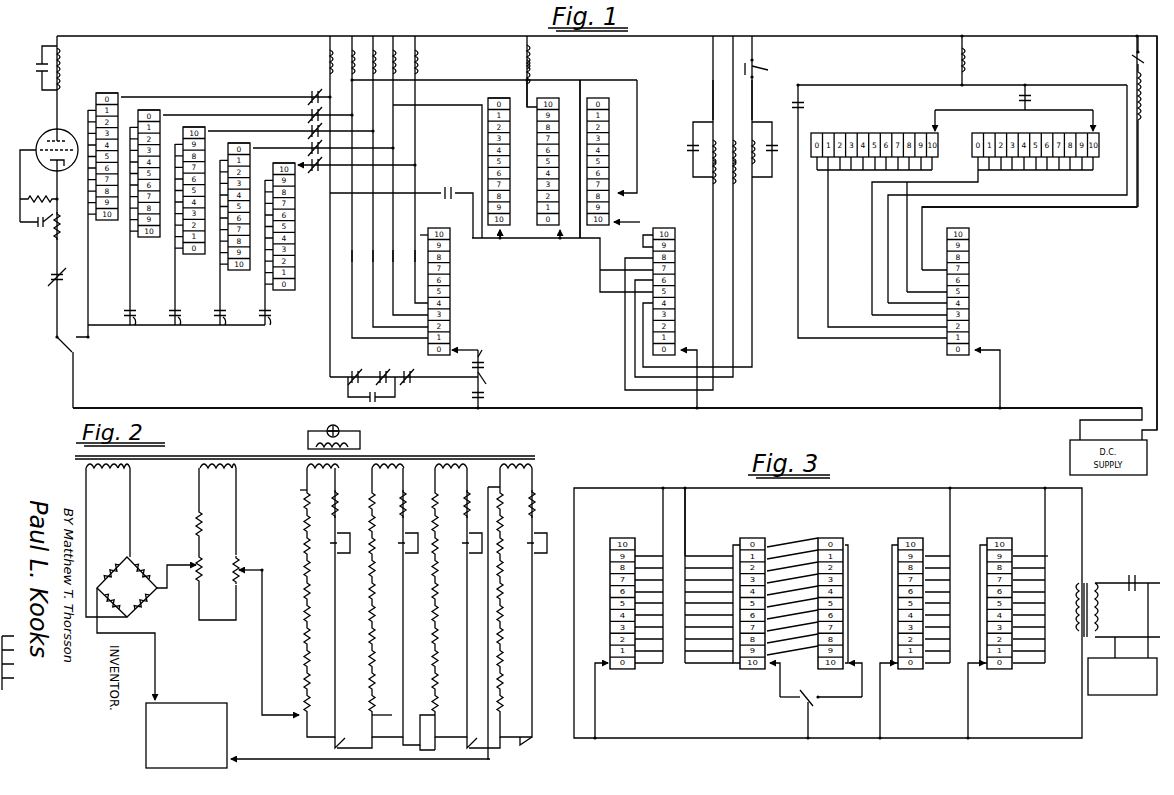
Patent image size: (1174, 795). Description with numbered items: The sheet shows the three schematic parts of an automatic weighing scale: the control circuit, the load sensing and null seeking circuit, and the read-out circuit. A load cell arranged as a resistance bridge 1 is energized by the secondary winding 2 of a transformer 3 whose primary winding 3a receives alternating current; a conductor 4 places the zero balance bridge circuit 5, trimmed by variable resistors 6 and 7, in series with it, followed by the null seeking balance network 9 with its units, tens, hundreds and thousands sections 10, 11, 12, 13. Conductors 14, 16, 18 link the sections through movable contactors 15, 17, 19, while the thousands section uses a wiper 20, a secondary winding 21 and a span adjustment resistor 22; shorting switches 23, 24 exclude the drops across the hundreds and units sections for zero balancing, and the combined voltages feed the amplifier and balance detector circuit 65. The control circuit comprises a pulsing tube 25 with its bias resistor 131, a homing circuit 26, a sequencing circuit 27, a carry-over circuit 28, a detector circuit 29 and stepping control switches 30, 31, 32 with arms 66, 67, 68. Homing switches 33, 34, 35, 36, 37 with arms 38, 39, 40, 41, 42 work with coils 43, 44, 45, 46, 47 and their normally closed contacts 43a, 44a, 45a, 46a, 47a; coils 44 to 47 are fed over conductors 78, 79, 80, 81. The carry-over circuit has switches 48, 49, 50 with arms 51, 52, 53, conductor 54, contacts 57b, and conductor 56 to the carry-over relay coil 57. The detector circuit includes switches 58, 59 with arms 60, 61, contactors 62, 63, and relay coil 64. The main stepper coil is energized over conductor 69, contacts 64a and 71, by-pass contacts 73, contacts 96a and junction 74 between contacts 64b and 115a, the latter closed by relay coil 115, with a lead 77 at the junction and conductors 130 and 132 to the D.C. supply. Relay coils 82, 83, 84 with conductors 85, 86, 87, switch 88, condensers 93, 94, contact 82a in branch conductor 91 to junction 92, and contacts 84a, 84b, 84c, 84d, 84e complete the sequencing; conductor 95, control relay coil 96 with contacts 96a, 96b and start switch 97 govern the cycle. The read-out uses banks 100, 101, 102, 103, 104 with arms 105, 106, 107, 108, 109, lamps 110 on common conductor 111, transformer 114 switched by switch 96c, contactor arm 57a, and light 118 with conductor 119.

In FIG. 2, the resistance bridge 1 is at (127, 587).
In FIG. 2, the secondary winding 2 is at (108, 540).
In FIG. 2, the transformer 3 is at (256, 455).
In FIG. 2, the primary winding 3a is at (361, 439).
In FIG. 2, the conductor 4 is at (180, 565).
In FIG. 2, the zero balance bridge circuit 5 is at (220, 524).
In FIG. 2, the variable resistor 6 is at (206, 569).
In FIG. 2, the variable resistor 7 is at (236, 578).
In FIG. 2, the null seeking balance network 9 is at (293, 538).
In FIG. 2, the units section 10 is at (532, 492).
In FIG. 2, the tens section 11 is at (462, 600).
In FIG. 2, the hundreds section 12 is at (393, 600).
In FIG. 2, the thousands section 13 is at (347, 493).
In FIG. 2, the conductor 14 is at (337, 748).
In FIG. 2, the movable contactor 15 is at (388, 721).
In FIG. 2, the conductor 16 is at (416, 720).
In FIG. 2, the movable contactor 17 is at (432, 750).
In FIG. 2, the conductor 18 is at (455, 740).
In FIG. 2, the movable contactor 19 is at (510, 746).
In FIG. 2, the wiper 20 is at (275, 718).
In FIG. 2, the secondary winding 21 is at (316, 600).
In FIG. 2, the span adjustment resistor 22 is at (343, 535).
In FIG. 2, the shorting switch 23 is at (346, 726).
In FIG. 2, the shorting switch 24 is at (477, 726).
In FIG. 1, the pulsing tube 25 is at (44, 141).
In FIG. 1, the homing circuit 26 is at (251, 183).
In FIG. 1, the sequencing circuit 27 is at (476, 168).
In FIG. 1, the carry-over circuit 28 is at (605, 140).
In FIG. 1, the detector circuit 29 is at (962, 62).
In FIG. 1, the stepping control switch 30 is at (448, 302).
In FIG. 1, the stepping control switch 31 is at (678, 300).
In FIG. 1, the stepping control switch 32 is at (972, 304).
In FIG. 1, the adjustable contactor switch 33 is at (104, 221).
In FIG. 1, the adjustable contactor switch 34 is at (147, 238).
In FIG. 1, the adjustable contactor switch 35 is at (192, 255).
In FIG. 1, the adjustable contactor switch 36 is at (237, 271).
In FIG. 1, the adjustable contactor switch 37 is at (282, 291).
In FIG. 1, the movable switch arm 38 is at (120, 96).
In FIG. 1, the movable switch arm 39 is at (162, 113).
In FIG. 1, the movable switch arm 40 is at (207, 130).
In FIG. 1, the movable switch arm 41 is at (251, 146).
In FIG. 1, the movable switch arm 42 is at (294, 163).
In FIG. 1, the main stepper relay actuating coil 43 is at (328, 63).
In FIG. 1, the normally closed contact 43a is at (302, 92).
In FIG. 1, the actuating coil 44 is at (352, 42).
In FIG. 1, the normally closed contact 44a is at (302, 110).
In FIG. 1, the actuating coil 45 is at (373, 42).
In FIG. 1, the normally closed contact 45a is at (302, 126).
In FIG. 1, the actuating coil 46 is at (393, 42).
In FIG. 1, the normally closed contact 46a is at (303, 144).
In FIG. 1, the actuating coil 47 is at (415, 42).
In FIG. 1, the normally closed contact 47a is at (316, 171).
In FIG. 1, the stepping contactor switch 48 is at (609, 148).
In FIG. 1, the stepping contactor switch 49 is at (537, 155).
In FIG. 1, the stepping contactor switch 50 is at (488, 100).
In FIG. 1, the wiper arm 51 is at (636, 213).
In FIG. 1, the wiper arm 52 is at (563, 236).
In FIG. 1, the wiper arm 53 is at (506, 236).
In FIG. 1, the conductor 54 is at (548, 80).
In FIG. 1, the conductor 56 is at (525, 76).
In FIG. 1, the carry-over relay coil 57 is at (525, 58).
In FIG. 3, the contactor arm 57a is at (819, 715).
In FIG. 1, the contacts 57b is at (617, 190).
In FIG. 1, the stepping contactor switch 58 is at (886, 133).
In FIG. 1, the stepping contactor switch 59 is at (1023, 133).
In FIG. 1, the switch arm 60 is at (935, 112).
In FIG. 1, the switch arm 61 is at (1092, 112).
In FIG. 1, the contactor 62 is at (804, 106).
In FIG. 1, the contactor 63 is at (1031, 99).
In FIG. 1, the relay coil 64 is at (966, 58).
In FIG. 1, the normally closed contacts 64a is at (350, 370).
In FIG. 1, the contacts 64b is at (484, 365).
In FIG. 2, the amplifier and balance detector circuit 65 is at (196, 703).
In FIG. 1, the movable switch arm 66 is at (456, 350).
In FIG. 1, the movable switch arm 67 is at (683, 348).
In FIG. 1, the movable switch arm 68 is at (982, 356).
In FIG. 1, the conductor 69 is at (330, 374).
In FIG. 1, the normally closed contacts 71 is at (381, 370).
In FIG. 1, the normally open contacts 73 is at (382, 397).
In FIG. 1, the junction 74 is at (485, 378).
In FIG. 1, the lead 77 is at (485, 355).
In FIG. 1, the conductor 78 is at (342, 264).
In FIG. 1, the conductor 79 is at (363, 264).
In FIG. 1, the conductor 80 is at (384, 264).
In FIG. 1, the conductor 81 is at (405, 264).
In FIG. 1, the relay coil 82 is at (712, 172).
In FIG. 1, the normally open contact 82a is at (434, 220).
In FIG. 1, the relay coil 83 is at (732, 178).
In FIG. 1, the relay coil 84 is at (753, 125).
In FIG. 1, the normally open contacts 84a is at (79, 371).
In FIG. 1, the contact 84b is at (129, 329).
In FIG. 1, the contact 84c is at (173, 329).
In FIG. 1, the contact 84d is at (218, 329).
In FIG. 1, the contact 84e is at (265, 329).
In FIG. 1, the conductor 85 is at (713, 96).
In FIG. 1, the conductor 86 is at (713, 60).
In FIG. 1, the conductor 87 is at (753, 90).
In FIG. 1, the normally closed switch 88 is at (755, 63).
In FIG. 1, the branch conductor 91 is at (448, 200).
In FIG. 1, the junction 92 is at (401, 206).
In FIG. 1, the condenser 93 is at (690, 150).
In FIG. 1, the condenser 94 is at (776, 150).
In FIG. 1, the conductor 95 is at (1056, 208).
In FIG. 1, the control relay coil 96 is at (1136, 86).
In FIG. 1, the normally closed contacts 96a is at (410, 373).
In FIG. 1, the contacts 96b is at (50, 280).
In FIG. 3, the switch 96c is at (1132, 574).
In FIG. 1, the start switch 97 is at (1134, 58).
In FIG. 3, the contactor switch bank 100 is at (624, 670).
In FIG. 3, the contactor switch bank 101 is at (755, 668).
In FIG. 3, the contactor switch bank 102 is at (910, 670).
In FIG. 3, the contactor switch bank 103 is at (1000, 670).
In FIG. 3, the contactor switch bank 104 is at (842, 546).
In FIG. 3, the movable switch arm 105 is at (597, 660).
In FIG. 3, the movable switch arm 106 is at (795, 690).
In FIG. 3, the movable switch arm 107 is at (892, 668).
In FIG. 3, the movable switch arm 108 is at (982, 668).
In FIG. 3, the movable switch arm 109 is at (848, 668).
In FIG. 3, the lamps 110 is at (650, 554).
In FIG. 3, the conductor 111 is at (1046, 568).
In FIG. 3, the transformer 114 is at (1098, 630).
In FIG. 1, the relay coil 115 is at (63, 53).
In FIG. 1, the pulsing contacts 115a is at (484, 395).
In FIG. 3, the light 118 is at (706, 550).
In FIG. 3, the conductor 119 is at (688, 503).
In FIG. 1, the conductor 130 is at (866, 408).
In FIG. 1, the bias resistor 131 is at (53, 217).
In FIG. 1, the conductor 132 is at (1026, 26).